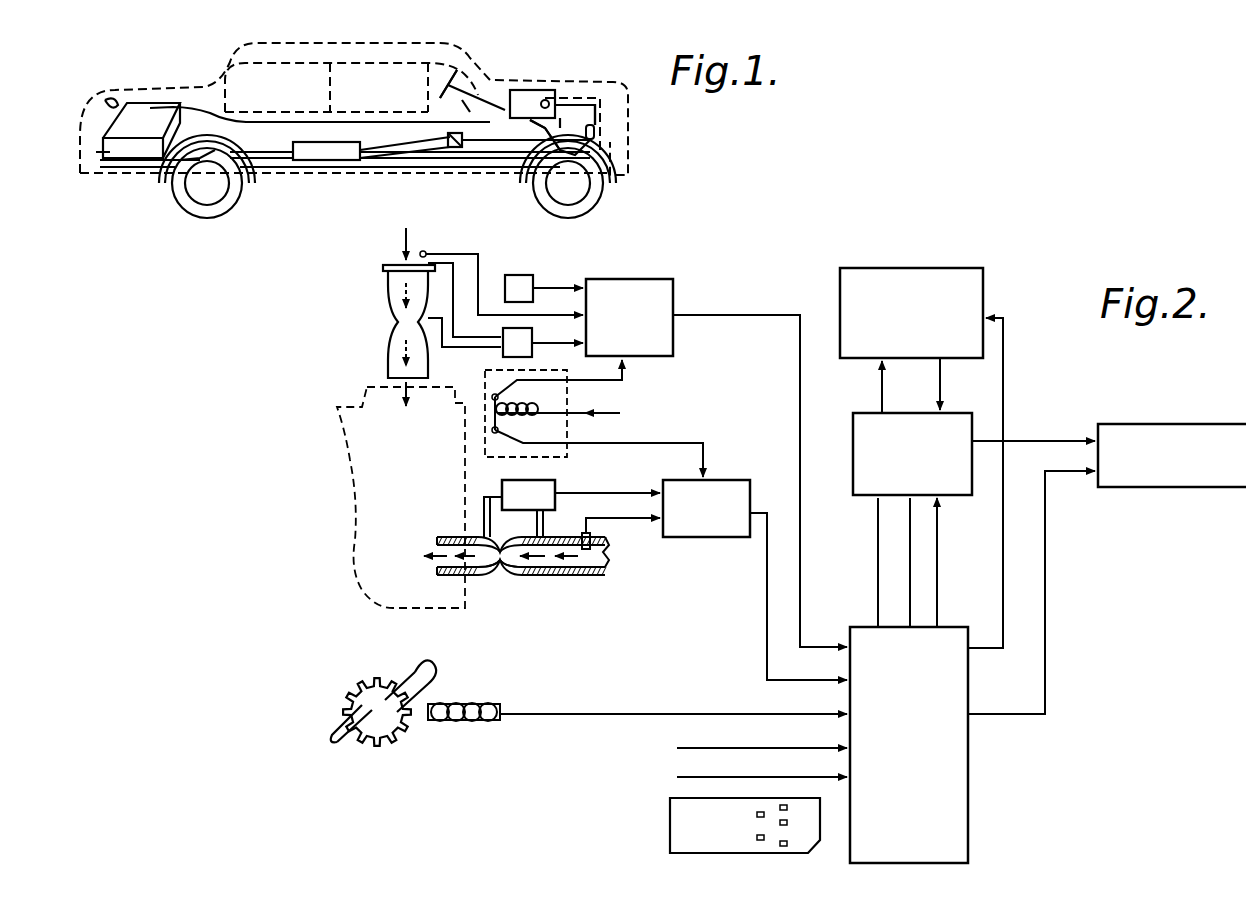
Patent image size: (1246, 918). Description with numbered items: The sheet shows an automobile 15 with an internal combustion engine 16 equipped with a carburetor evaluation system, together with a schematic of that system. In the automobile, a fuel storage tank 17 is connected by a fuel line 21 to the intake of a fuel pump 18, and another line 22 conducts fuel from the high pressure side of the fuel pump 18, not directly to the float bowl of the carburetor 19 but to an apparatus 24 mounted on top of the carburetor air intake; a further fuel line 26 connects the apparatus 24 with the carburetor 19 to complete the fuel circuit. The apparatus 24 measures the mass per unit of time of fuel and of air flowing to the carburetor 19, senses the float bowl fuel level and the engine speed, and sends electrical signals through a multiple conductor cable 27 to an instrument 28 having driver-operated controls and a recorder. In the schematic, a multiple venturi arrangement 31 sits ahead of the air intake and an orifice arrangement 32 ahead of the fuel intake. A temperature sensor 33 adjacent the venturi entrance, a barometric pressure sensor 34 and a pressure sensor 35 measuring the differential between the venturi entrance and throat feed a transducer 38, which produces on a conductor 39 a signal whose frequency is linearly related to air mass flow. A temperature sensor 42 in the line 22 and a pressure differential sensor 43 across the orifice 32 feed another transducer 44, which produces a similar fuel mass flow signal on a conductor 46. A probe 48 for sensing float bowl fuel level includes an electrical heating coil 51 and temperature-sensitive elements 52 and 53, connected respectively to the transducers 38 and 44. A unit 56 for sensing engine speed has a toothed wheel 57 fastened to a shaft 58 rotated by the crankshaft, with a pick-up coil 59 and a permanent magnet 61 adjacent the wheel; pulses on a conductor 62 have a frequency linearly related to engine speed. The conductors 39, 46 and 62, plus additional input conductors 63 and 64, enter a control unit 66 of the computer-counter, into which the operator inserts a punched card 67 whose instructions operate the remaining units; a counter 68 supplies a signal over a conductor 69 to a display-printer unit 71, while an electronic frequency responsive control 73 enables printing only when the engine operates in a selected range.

In FIG. 1, the automobile 15 is at (148, 57).
In FIG. 1, the internal combustion engine 16 is at (595, 97).
In FIG. 1, the fuel storage tank 17 is at (140, 150).
In FIG. 1, the fuel pump 18 is at (600, 136).
In FIG. 1, the carburetor 19 is at (535, 130).
In FIG. 2, the carburetor 19 is at (352, 396).
In FIG. 1, the fuel line 21 is at (280, 125).
In FIG. 1, the line 22 is at (605, 112).
In FIG. 2, the line 22 is at (590, 578).
In FIG. 1, the apparatus 24 is at (530, 92).
In FIG. 1, the fuel line 26 is at (548, 102).
In FIG. 2, the fuel line 26 is at (442, 577).
In FIG. 1, the multiple conductor cable 27 is at (505, 105).
In FIG. 1, the instrument 28 is at (450, 106).
In FIG. 2, the multiple venturi arrangement 31 is at (382, 316).
In FIG. 2, the orifice arrangement 32 is at (510, 577).
In FIG. 2, the temperature sensor 33 is at (426, 252).
In FIG. 2, the pressure sensor 34 is at (528, 281).
In FIG. 2, the pressure sensor 35 is at (534, 333).
In FIG. 2, the transducer 38 is at (660, 285).
In FIG. 2, the conductor 39 is at (748, 313).
In FIG. 2, the temperature sensor 42 is at (606, 553).
In FIG. 2, the pressure differential sensor 43 is at (558, 487).
In FIG. 2, the transducer 44 is at (735, 538).
In FIG. 2, the conductor 46 is at (762, 645).
In FIG. 2, the probe 48 is at (568, 403).
In FIG. 2, the electrical heating coil 51 is at (490, 412).
In FIG. 2, the temperature-sensitive element 52 is at (490, 398).
In FIG. 2, the temperature-sensitive element 53 is at (492, 432).
In FIG. 2, the unit 56 is at (440, 740).
In FIG. 2, the toothed wheel 57 is at (362, 692).
In FIG. 2, the shaft 58 is at (338, 745).
In FIG. 2, the coil 59 is at (470, 702).
In FIG. 2, the permanent magnet 61 is at (505, 718).
In FIG. 2, the conductor 62 is at (613, 714).
In FIG. 2, the conductor 63 is at (677, 750).
In FIG. 2, the conductor 64 is at (677, 779).
In FIG. 2, the control unit 66 is at (960, 805).
In FIG. 2, the punched card 67 is at (752, 852).
In FIG. 2, the counter 68 is at (879, 385).
In FIG. 2, the conductor 69 is at (1053, 440).
In FIG. 2, the display-printer unit 71 is at (1195, 424).
In FIG. 2, the electronic frequency responsive control 73 is at (973, 268).